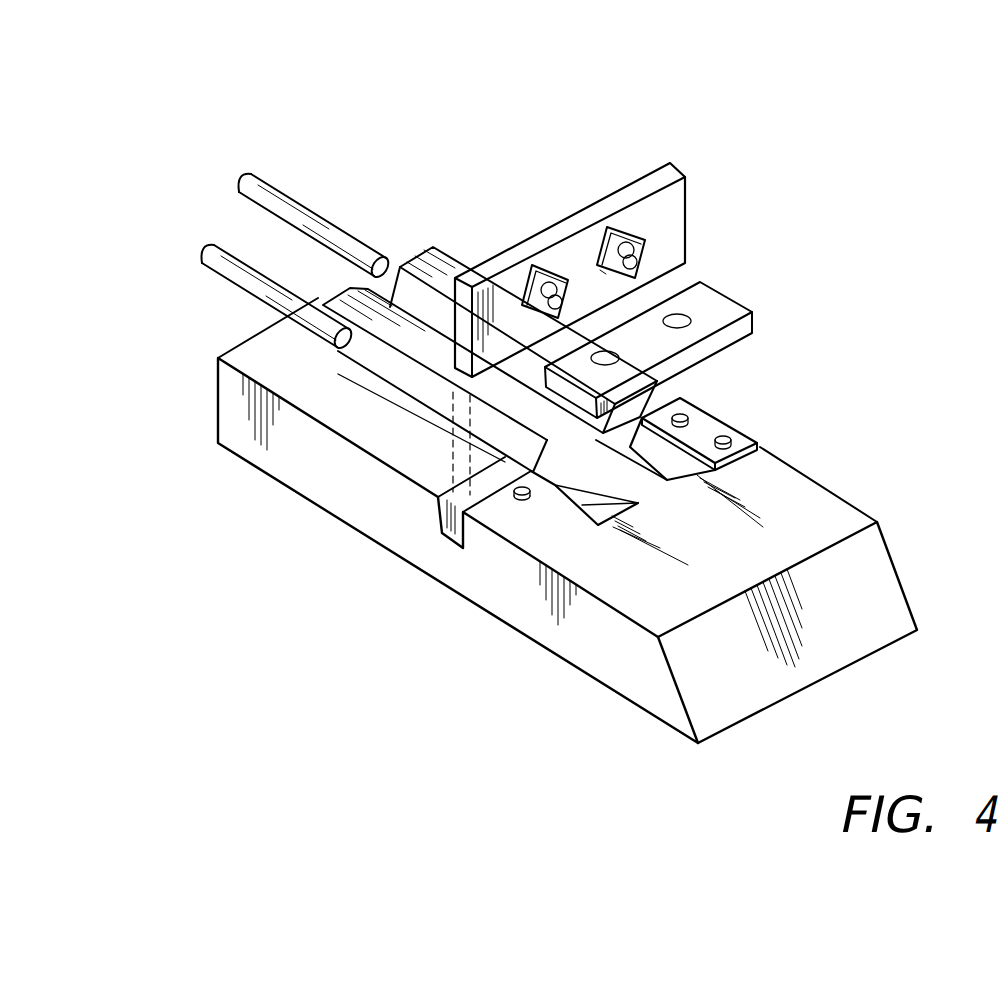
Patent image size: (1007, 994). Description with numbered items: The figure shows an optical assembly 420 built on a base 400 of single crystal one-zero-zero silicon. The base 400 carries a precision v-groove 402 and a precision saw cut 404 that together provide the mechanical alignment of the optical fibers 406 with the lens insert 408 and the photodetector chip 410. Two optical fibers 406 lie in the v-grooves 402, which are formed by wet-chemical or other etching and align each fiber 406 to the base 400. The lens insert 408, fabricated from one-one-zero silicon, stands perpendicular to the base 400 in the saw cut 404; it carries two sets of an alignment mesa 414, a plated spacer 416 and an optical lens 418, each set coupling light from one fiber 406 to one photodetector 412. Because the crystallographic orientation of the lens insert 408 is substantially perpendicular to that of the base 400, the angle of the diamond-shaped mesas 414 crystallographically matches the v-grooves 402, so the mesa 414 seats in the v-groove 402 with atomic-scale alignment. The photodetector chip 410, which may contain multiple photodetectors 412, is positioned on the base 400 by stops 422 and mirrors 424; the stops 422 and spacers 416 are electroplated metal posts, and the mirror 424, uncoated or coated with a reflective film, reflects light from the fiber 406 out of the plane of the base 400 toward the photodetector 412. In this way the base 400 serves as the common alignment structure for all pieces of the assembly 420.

The base 400 is at (615, 655).
The v-groove 402 is at (400, 265).
The saw cut 404 is at (438, 522).
The optical fiber 406 is at (210, 250).
The lens insert 408 is at (620, 195).
The photodetector chip 410 is at (722, 342).
The photodetector 412 is at (685, 316).
The alignment mesa 414 is at (548, 283).
The plated spacer 416 is at (650, 262).
The optical lens 418 is at (603, 272).
The assembly 420 is at (455, 658).
The stop 422 is at (517, 497).
The mirror 424 is at (715, 460).